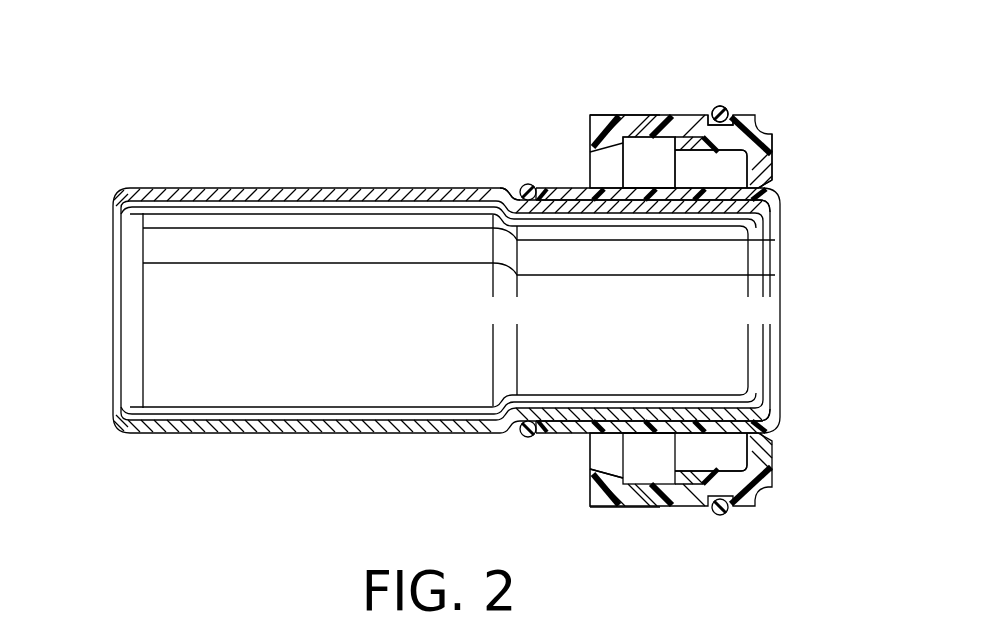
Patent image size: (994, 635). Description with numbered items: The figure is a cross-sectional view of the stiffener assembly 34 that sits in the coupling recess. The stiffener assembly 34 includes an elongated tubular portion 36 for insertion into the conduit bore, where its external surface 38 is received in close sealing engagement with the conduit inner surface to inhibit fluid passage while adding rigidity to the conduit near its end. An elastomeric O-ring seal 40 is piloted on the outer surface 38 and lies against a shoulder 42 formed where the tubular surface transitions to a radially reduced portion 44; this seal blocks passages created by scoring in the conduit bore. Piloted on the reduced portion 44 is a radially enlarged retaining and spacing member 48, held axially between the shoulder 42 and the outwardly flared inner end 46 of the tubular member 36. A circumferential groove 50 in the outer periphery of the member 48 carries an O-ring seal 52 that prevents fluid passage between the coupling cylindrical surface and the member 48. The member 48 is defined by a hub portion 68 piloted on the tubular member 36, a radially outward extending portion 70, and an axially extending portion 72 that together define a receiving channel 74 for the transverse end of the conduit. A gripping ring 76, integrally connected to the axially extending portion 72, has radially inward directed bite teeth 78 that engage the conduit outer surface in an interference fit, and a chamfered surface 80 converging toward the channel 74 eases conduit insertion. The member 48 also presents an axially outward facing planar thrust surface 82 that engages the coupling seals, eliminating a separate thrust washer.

The stiffener assembly 34 is at (523, 102).
The tubular portion 36 is at (178, 296).
The external surface 38 is at (182, 183).
The O-ring seal 40 is at (530, 183).
The shoulder 42 is at (508, 192).
The radially reduced portion 44 is at (633, 410).
The inner end 46 is at (789, 407).
The retaining and spacing member 48 is at (774, 115).
The circumferential groove 50 is at (731, 122).
The O-ring seal 52 is at (716, 108).
The hub portion 68 is at (572, 187).
The radially outward extending portion 70 is at (773, 155).
The axially extending portion 72 is at (775, 183).
The receiving channel 74 is at (704, 174).
The gripping ring 76 is at (628, 115).
The bite teeth 78 is at (627, 155).
The chamfered surface 80 is at (609, 465).
The thrust surface 82 is at (588, 498).